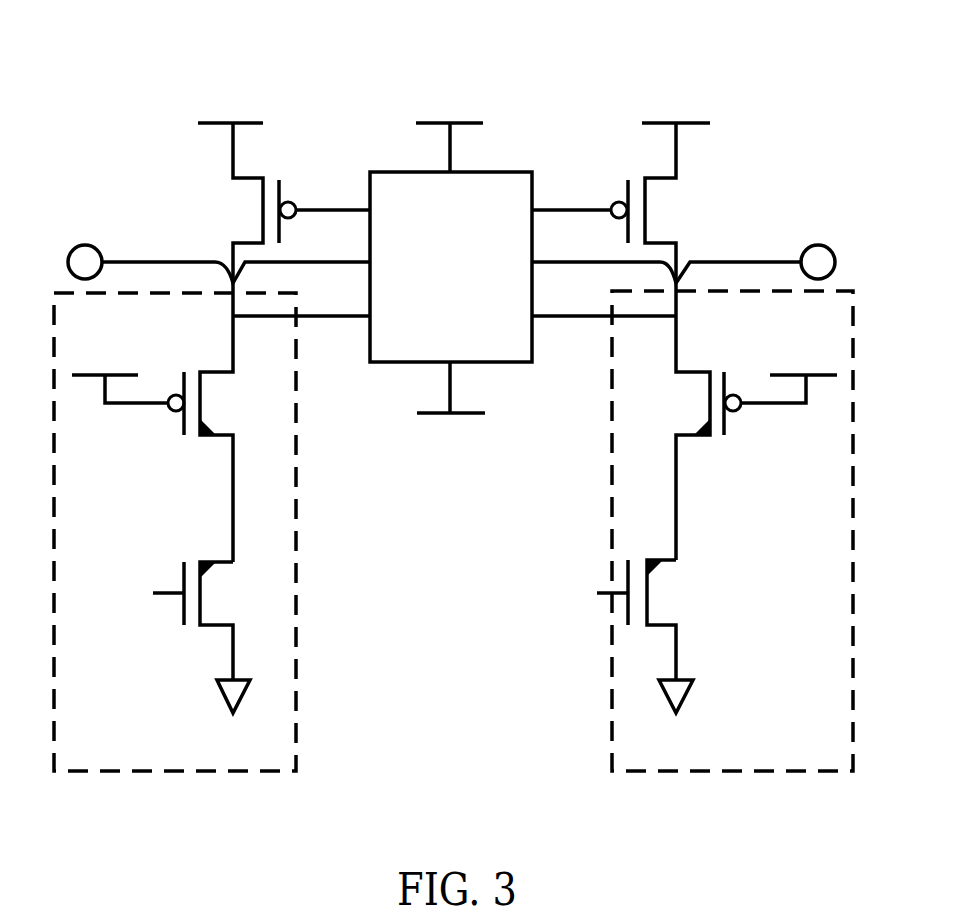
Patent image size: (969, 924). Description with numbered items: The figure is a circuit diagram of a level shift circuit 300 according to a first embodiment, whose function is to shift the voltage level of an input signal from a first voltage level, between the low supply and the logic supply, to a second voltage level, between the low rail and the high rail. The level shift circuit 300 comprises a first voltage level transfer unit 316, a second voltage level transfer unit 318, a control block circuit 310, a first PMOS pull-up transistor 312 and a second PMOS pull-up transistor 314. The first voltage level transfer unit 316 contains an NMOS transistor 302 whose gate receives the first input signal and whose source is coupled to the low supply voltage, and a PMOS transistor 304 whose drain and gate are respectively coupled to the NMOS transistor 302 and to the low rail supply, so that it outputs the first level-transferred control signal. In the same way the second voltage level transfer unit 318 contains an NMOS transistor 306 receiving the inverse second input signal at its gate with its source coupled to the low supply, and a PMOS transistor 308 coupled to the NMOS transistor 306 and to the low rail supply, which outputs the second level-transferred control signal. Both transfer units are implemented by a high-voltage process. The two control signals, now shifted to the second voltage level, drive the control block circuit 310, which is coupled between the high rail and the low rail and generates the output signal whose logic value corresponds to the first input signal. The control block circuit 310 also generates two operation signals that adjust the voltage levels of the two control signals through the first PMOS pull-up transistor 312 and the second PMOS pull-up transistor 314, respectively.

The level shift circuit 300 is at (422, 39).
The NMOS transistor 302 is at (208, 550).
The PMOS transistor 304 is at (215, 365).
The NMOS transistor 306 is at (693, 578).
The PMOS transistor 308 is at (693, 362).
The control block circuit 310 is at (451, 271).
The first PMOS pull-up transistor 312 is at (223, 212).
The second PMOS pull-up transistor 314 is at (683, 204).
The first voltage level transfer unit 316 is at (70, 762).
The second voltage level transfer unit 318 is at (803, 762).